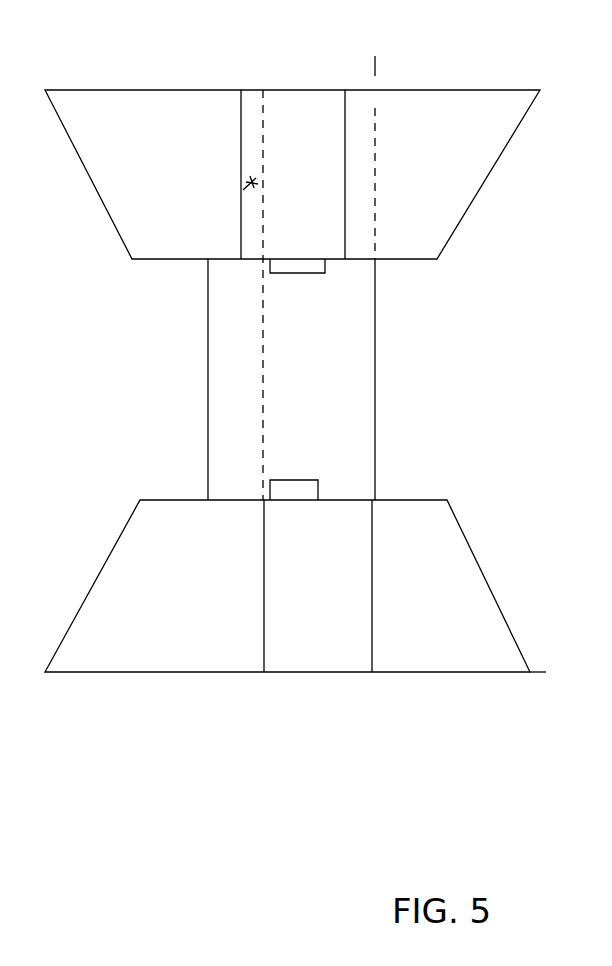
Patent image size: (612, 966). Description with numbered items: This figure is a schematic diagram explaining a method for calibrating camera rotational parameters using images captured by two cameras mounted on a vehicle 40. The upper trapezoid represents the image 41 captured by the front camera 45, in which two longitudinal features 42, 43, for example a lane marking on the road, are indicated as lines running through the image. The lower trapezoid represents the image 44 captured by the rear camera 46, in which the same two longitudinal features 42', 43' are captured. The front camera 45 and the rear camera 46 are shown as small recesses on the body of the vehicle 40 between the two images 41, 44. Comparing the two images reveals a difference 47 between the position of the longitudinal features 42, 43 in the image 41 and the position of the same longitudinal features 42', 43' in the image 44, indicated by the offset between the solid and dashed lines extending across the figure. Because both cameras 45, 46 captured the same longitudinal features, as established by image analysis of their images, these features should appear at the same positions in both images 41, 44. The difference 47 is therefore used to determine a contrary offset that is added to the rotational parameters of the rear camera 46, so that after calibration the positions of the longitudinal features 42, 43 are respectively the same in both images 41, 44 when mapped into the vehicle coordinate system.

The vehicle 40 is at (371, 392).
The image 41 is at (118, 131).
The longitudinal feature 42 is at (218, 141).
The longitudinal feature 42' is at (263, 391).
The longitudinal feature 43 is at (332, 143).
The longitudinal feature 43' is at (407, 380).
The image 44 is at (126, 652).
The front camera 45 is at (325, 273).
The rear camera 46 is at (318, 483).
The difference 47 is at (241, 192).